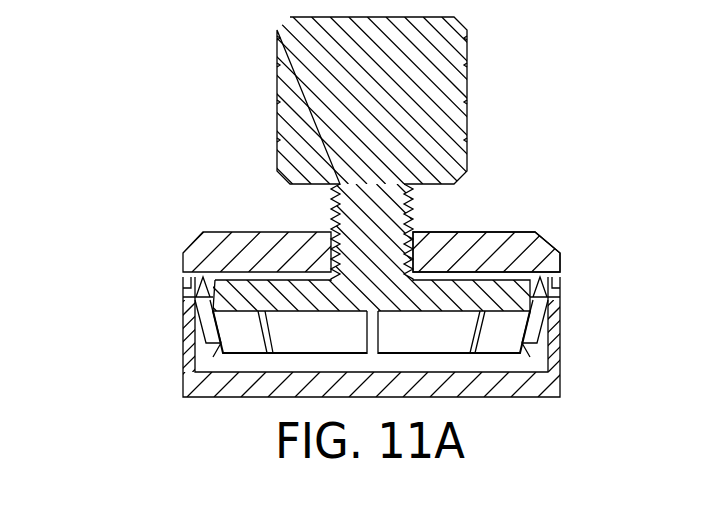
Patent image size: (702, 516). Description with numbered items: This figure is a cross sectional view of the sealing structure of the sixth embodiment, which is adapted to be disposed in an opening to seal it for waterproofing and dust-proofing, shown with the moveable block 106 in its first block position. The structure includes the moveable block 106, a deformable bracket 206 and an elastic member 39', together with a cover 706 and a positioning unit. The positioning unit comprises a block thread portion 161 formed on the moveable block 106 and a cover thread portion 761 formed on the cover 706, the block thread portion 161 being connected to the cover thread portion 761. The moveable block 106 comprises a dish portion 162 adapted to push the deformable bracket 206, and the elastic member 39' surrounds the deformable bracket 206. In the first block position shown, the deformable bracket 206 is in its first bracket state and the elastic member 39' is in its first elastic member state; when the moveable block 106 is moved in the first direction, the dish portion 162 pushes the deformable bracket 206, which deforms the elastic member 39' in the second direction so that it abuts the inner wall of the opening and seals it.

The moveable block 106 is at (413, 88).
The block thread portion 161 is at (413, 207).
The cover thread portion 761 is at (461, 235).
The cover 706 is at (480, 260).
The dish portion 162 is at (513, 292).
The deformable bracket 206 is at (537, 345).
The elastic member 39' is at (315, 328).